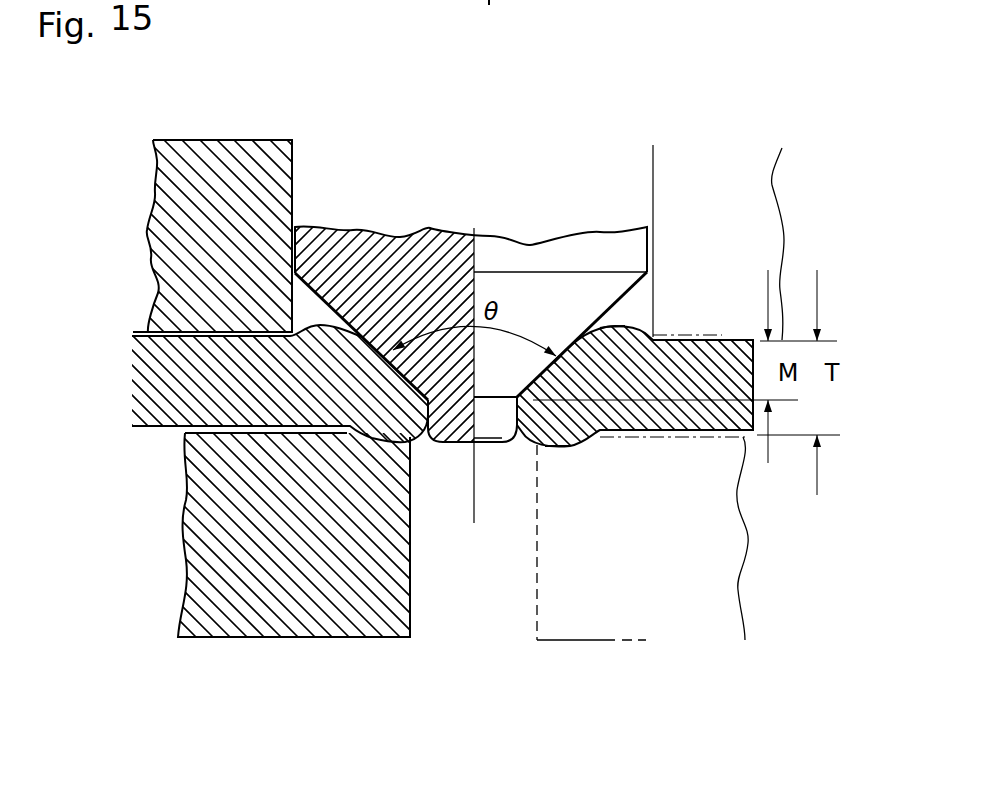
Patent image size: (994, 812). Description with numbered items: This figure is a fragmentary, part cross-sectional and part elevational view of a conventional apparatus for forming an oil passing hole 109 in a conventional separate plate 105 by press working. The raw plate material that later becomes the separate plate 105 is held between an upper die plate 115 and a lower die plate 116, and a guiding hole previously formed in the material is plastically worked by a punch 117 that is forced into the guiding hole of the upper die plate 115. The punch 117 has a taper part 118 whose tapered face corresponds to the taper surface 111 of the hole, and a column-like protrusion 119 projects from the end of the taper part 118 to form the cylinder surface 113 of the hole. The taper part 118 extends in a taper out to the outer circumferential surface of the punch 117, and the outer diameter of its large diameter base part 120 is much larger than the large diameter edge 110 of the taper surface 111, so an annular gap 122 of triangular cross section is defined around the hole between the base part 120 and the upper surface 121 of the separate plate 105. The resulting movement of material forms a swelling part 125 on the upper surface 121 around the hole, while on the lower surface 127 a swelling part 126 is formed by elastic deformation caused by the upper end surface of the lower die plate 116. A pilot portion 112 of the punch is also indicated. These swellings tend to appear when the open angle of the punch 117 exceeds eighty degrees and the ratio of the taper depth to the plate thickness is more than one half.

The separate plate 105 is at (172, 425).
The oil passing hole 109 is at (487, 480).
The large diameter edge 110 is at (558, 355).
The taper surface 111 is at (390, 348).
The pilot tip portion of punch 112 is at (520, 393).
The cylinder surface 113 is at (432, 441).
The upper die plate 115 is at (145, 237).
The lower die plate 116 is at (191, 503).
The punch 117 is at (405, 380).
The taper part 118 is at (577, 290).
The column-like protrusion 119 is at (488, 428).
The large diameter base part 120 is at (648, 272).
The upper surface 121 is at (722, 338).
The annular gap 122 is at (308, 302).
The swelling part 125 is at (627, 327).
The swelling part 126 is at (565, 441).
The lower surface 127 is at (652, 438).